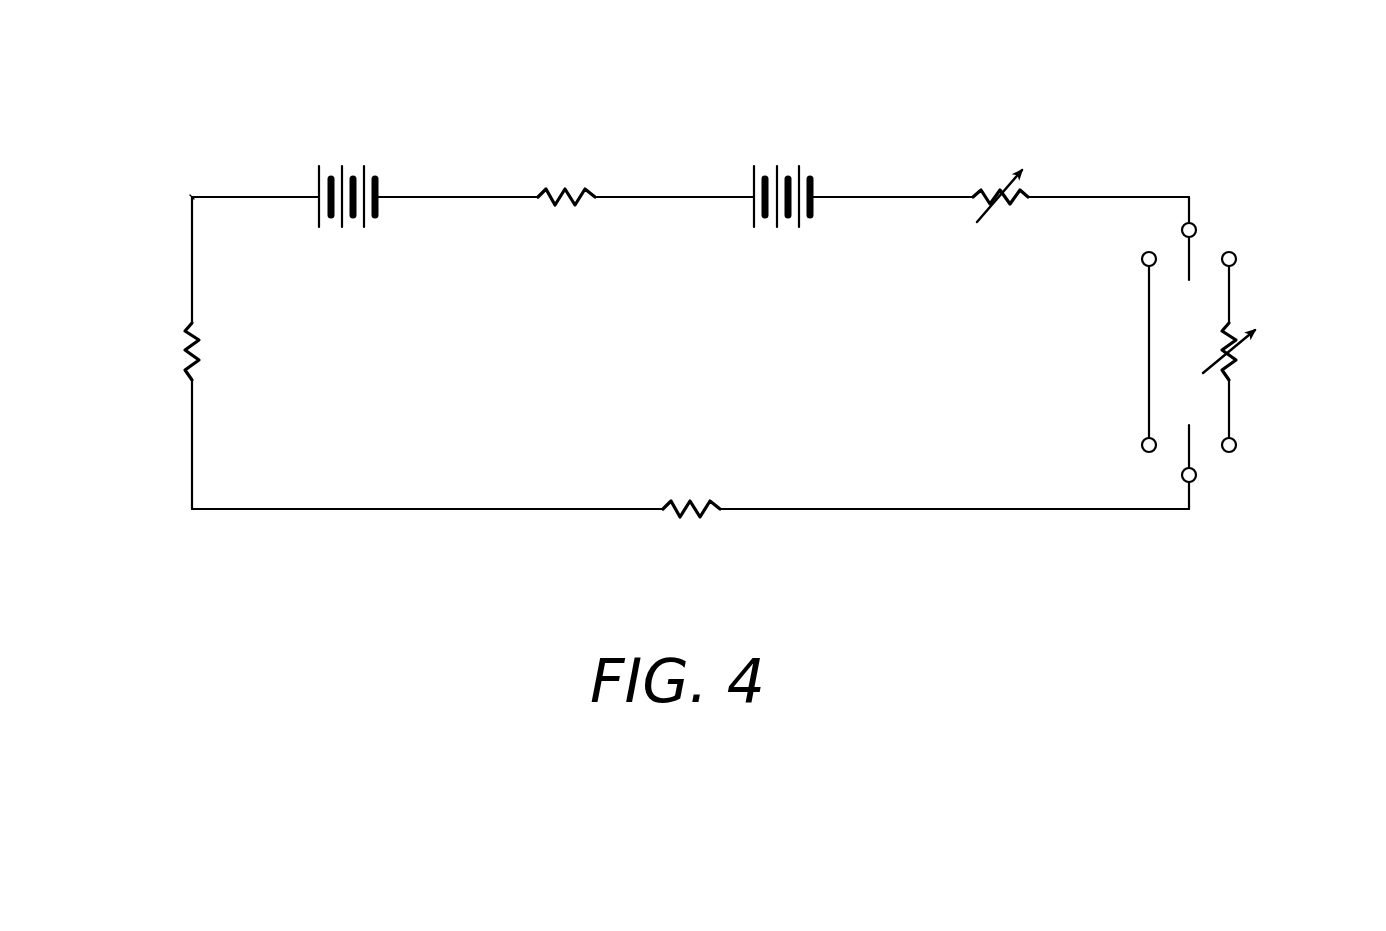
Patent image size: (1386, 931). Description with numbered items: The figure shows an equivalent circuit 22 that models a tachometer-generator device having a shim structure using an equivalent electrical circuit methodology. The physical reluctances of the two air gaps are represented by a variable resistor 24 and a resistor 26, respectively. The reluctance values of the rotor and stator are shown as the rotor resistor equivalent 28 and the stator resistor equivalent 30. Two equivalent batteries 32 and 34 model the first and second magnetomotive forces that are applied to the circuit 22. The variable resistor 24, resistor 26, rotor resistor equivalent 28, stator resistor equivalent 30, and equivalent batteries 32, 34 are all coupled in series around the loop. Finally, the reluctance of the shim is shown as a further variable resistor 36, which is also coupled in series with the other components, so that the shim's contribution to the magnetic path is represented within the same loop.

The equivalent circuit 22 is at (140, 90).
The variable resistor 24 is at (1003, 165).
The resistor 26 is at (183, 340).
The Rrotor resistor equivalent 28 is at (574, 188).
The Rstator resistor equivalent 30 is at (697, 495).
The equivalent battery 32 is at (351, 166).
The equivalent battery 34 is at (785, 165).
The variable resistor 36 is at (1237, 266).